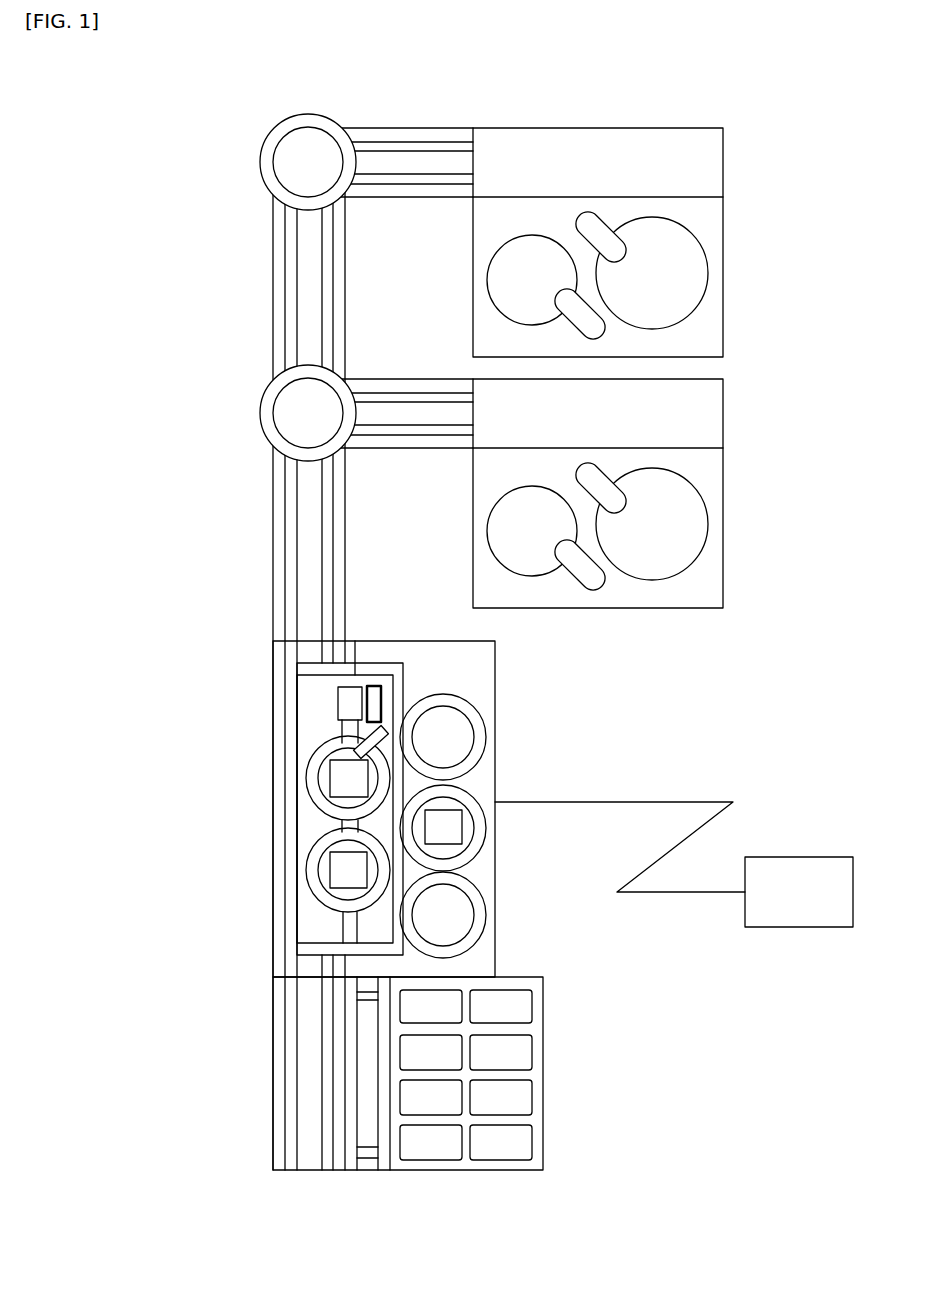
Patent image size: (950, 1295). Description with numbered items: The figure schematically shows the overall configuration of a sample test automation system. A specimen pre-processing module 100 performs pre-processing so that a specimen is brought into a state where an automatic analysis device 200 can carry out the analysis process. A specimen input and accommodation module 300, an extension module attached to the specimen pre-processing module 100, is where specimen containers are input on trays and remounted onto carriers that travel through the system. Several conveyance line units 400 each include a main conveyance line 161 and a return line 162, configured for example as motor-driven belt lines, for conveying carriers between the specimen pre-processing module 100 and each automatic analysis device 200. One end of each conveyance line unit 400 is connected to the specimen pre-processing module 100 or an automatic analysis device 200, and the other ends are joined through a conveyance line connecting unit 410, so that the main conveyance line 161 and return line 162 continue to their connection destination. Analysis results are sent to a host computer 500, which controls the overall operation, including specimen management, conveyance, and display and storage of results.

The specimen pre-processing module 100 is at (500, 686).
The main conveyance line 161 is at (328, 572).
The return line 162 is at (292, 541).
The automatic analysis device 200 is at (727, 246).
The specimen input and accommodation module 300 is at (548, 1050).
The conveyance line unit 400 is at (408, 126).
The conveyance line connecting unit 410 is at (302, 112).
The host computer 500 is at (818, 856).